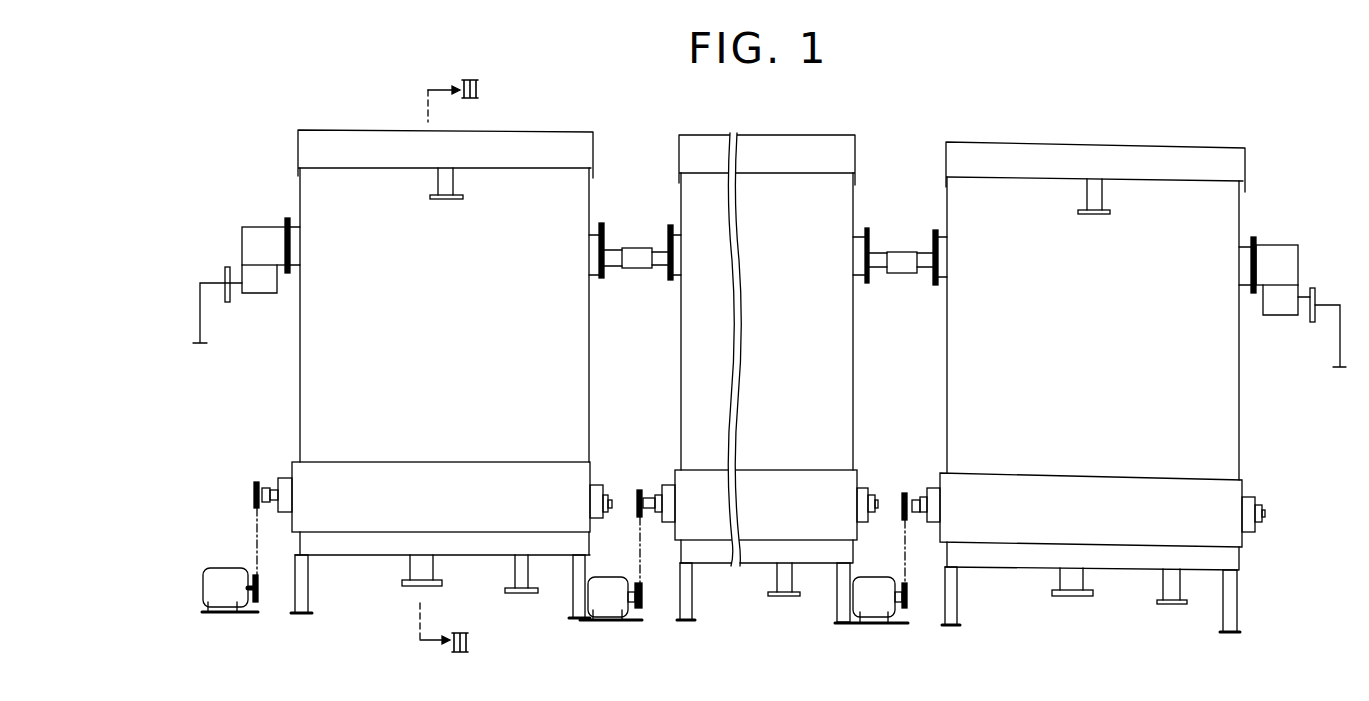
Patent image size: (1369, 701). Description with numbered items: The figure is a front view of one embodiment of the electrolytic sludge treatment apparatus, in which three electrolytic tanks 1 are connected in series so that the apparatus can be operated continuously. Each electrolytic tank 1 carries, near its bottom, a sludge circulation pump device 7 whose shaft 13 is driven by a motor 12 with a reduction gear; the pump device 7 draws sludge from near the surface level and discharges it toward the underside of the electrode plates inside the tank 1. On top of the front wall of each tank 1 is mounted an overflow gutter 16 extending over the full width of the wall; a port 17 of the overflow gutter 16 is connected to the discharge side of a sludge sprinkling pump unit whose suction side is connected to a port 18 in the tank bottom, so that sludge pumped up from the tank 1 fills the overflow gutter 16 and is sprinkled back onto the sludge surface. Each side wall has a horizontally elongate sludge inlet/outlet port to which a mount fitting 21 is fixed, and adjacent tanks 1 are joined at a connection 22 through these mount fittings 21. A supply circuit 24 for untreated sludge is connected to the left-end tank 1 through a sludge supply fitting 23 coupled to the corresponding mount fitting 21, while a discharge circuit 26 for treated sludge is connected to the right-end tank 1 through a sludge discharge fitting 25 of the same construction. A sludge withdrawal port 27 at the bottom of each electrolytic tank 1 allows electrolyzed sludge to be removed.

The electrolytic tank 1 is at (452, 291).
The sludge circulation pump device 7 is at (362, 510).
The motor with a reduction gear 12 is at (223, 588).
The shaft 13 is at (270, 482).
The overflow gutter 16 is at (376, 150).
The port 17 is at (447, 186).
The port 18 is at (523, 573).
The mount fitting 21 is at (288, 232).
The connection 22 is at (635, 258).
The sludge supply fitting 23 is at (267, 243).
The supply circuit 24 is at (200, 320).
The sludge discharge fitting 25 is at (1285, 263).
The discharge circuit 26 is at (1340, 345).
The sludge withdrawal port 27 is at (418, 565).